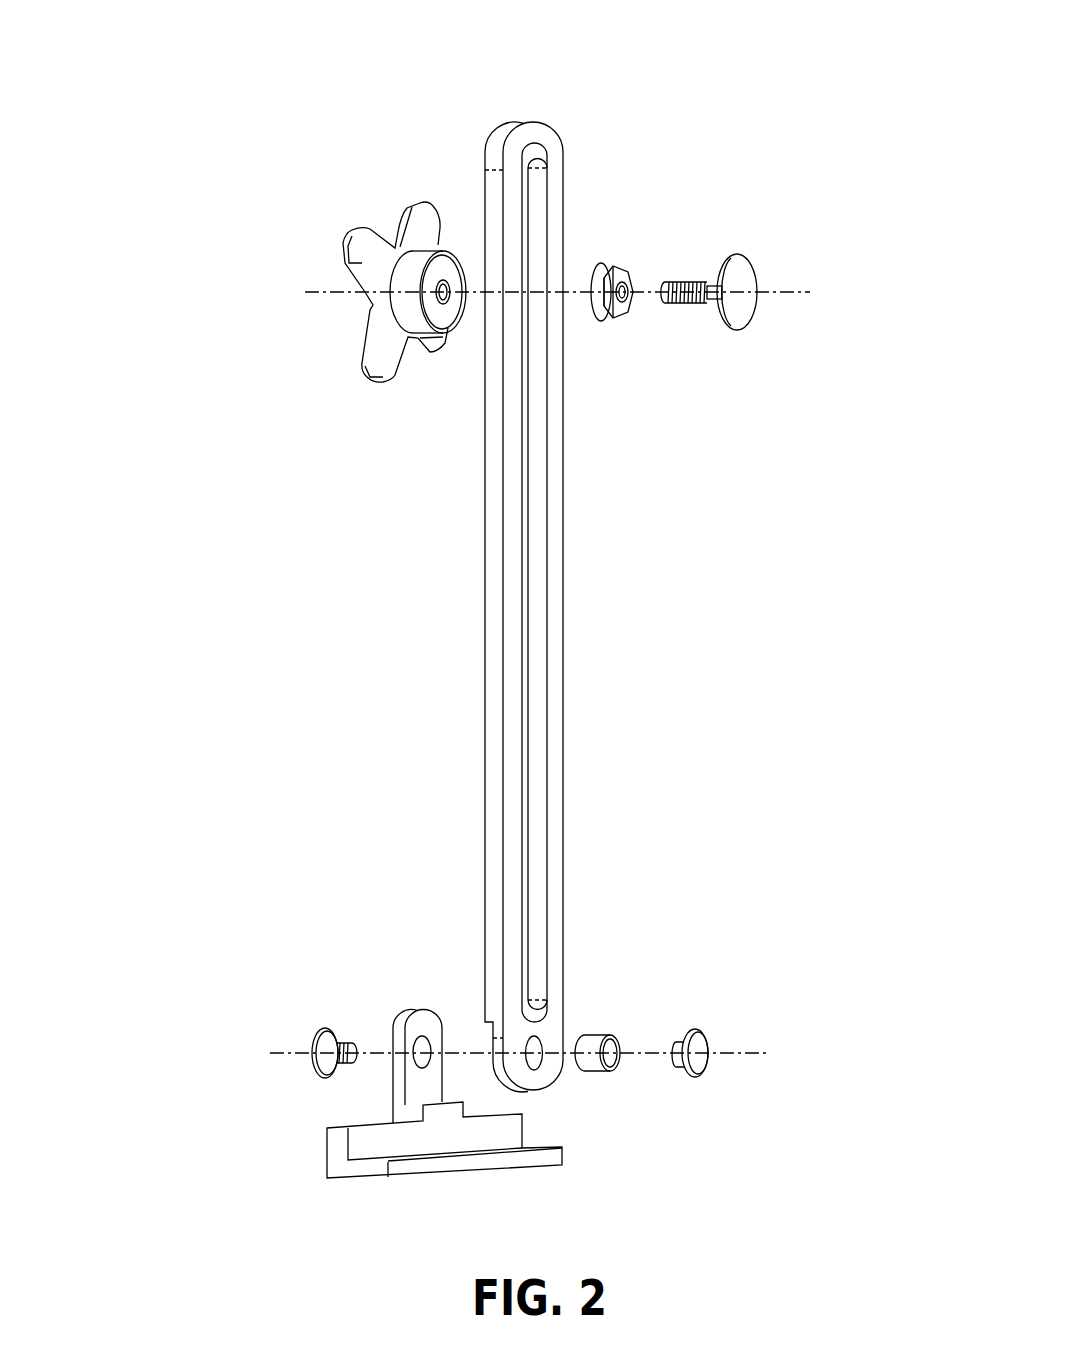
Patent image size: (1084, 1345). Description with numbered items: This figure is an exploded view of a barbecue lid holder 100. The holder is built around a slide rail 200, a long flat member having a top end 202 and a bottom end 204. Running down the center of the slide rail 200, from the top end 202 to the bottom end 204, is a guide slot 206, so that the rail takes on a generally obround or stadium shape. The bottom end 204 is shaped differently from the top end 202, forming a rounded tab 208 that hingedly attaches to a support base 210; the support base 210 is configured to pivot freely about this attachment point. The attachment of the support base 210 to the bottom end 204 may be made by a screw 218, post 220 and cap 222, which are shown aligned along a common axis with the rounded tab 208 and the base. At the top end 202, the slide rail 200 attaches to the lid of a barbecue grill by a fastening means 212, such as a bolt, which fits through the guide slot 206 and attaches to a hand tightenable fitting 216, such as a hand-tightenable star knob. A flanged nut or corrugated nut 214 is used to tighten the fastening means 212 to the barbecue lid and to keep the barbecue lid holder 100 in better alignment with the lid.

The barbecue lid holder 100 is at (161, 77).
The slide rail 200 is at (497, 617).
The top end 202 is at (502, 617).
The bottom end 204 is at (458, 1009).
The guide slot 206 is at (546, 628).
The rounded tab 208 is at (566, 1085).
The support base 210 is at (312, 1159).
The fastening means 212 is at (766, 254).
The flanged nut or corrugated nut 214 is at (649, 252).
The hand tightenable fitting 216 is at (352, 312).
The screw 218 is at (280, 1026).
The post 220 is at (622, 1015).
The cap 222 is at (721, 1027).